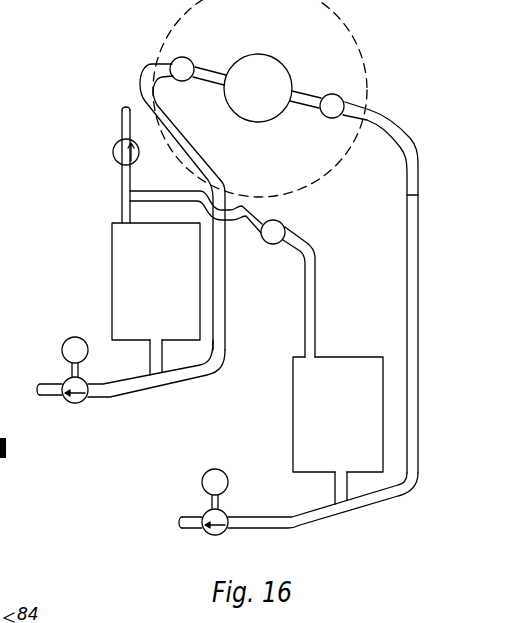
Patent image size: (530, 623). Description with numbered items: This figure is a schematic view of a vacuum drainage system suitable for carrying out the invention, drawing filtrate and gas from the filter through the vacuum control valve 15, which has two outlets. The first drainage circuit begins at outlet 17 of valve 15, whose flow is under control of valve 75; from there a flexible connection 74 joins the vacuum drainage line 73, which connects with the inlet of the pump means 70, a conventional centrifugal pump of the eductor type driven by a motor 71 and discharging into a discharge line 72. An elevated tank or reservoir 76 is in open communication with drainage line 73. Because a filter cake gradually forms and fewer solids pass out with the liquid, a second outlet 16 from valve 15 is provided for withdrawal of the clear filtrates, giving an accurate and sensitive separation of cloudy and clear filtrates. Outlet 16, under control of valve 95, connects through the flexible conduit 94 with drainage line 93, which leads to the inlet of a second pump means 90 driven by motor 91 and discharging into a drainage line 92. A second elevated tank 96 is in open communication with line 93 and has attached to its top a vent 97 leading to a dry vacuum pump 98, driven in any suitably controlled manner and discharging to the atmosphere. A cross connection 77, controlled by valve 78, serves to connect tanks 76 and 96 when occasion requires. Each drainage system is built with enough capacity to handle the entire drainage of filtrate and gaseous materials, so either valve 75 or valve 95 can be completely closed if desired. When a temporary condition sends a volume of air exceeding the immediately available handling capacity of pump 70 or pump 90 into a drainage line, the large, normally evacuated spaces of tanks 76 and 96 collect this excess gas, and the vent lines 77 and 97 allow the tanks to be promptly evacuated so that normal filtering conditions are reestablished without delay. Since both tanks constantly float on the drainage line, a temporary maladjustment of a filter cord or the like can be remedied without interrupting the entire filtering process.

The valve 15 is at (265, 70).
The second outlet 16 is at (208, 70).
The outlet 17 is at (309, 90).
The pump means 70 is at (222, 528).
The motor 71 is at (204, 477).
The discharge line 72 is at (194, 519).
The vacuum drainage line 73 is at (295, 524).
The flexible connection 74 is at (403, 136).
The valve 75 is at (345, 102).
The elevated tank 76 is at (295, 366).
The cross connection 77 is at (312, 282).
The valve 78 is at (282, 226).
The second pump means 90 is at (78, 397).
The motor 91 is at (68, 338).
The drainage line 92 is at (52, 380).
The drainage line 93 is at (143, 380).
The flexible conduit 94 is at (200, 151).
The valve 95 is at (193, 60).
The second elevated tank 96 is at (125, 235).
The vent 97 is at (122, 177).
The dry vacuum pump 98 is at (114, 147).